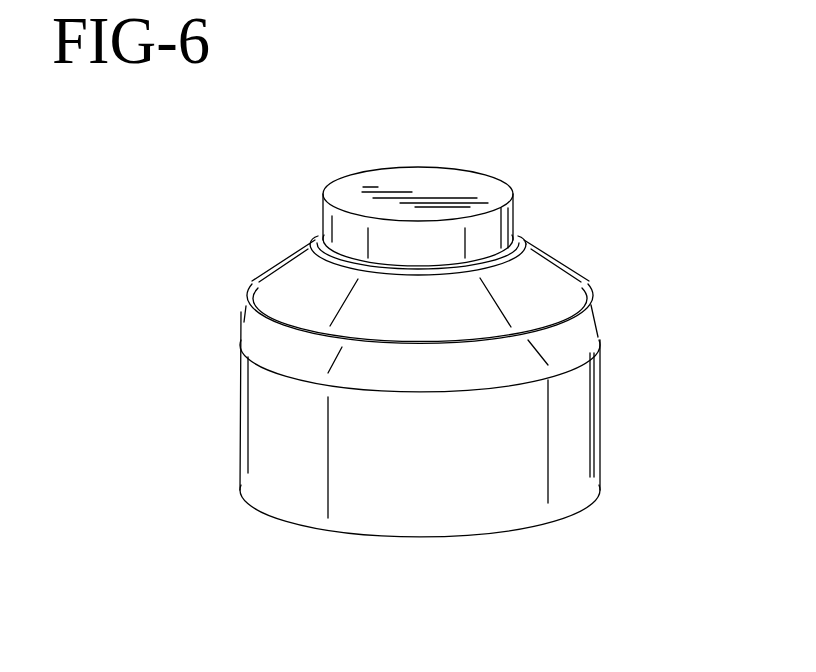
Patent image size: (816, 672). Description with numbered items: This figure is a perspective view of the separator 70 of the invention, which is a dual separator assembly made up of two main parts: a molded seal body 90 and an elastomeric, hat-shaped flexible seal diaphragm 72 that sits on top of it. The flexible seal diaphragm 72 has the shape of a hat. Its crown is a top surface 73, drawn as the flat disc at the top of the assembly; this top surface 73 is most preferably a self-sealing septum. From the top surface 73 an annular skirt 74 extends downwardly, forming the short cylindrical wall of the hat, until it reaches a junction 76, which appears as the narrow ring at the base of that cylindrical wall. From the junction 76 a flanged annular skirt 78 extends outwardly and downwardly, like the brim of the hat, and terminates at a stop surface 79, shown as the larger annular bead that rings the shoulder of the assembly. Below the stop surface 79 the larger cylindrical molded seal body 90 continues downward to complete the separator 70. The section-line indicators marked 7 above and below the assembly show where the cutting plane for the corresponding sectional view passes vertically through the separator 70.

The section line 7- 7 is at (363, 112).
The separator 70 is at (642, 236).
The flexible seal diaphragm 72 is at (395, 268).
The top surface 73 is at (455, 193).
The annular skirt 74 is at (511, 221).
The junction 76 is at (523, 232).
The flanged annular skirt 78 is at (390, 306).
The stop surface 79 is at (246, 303).
The molded seal body 90 is at (575, 410).